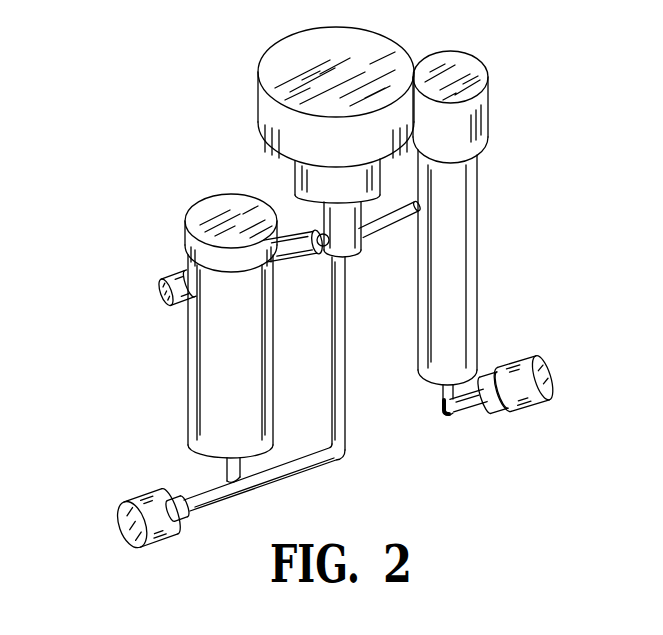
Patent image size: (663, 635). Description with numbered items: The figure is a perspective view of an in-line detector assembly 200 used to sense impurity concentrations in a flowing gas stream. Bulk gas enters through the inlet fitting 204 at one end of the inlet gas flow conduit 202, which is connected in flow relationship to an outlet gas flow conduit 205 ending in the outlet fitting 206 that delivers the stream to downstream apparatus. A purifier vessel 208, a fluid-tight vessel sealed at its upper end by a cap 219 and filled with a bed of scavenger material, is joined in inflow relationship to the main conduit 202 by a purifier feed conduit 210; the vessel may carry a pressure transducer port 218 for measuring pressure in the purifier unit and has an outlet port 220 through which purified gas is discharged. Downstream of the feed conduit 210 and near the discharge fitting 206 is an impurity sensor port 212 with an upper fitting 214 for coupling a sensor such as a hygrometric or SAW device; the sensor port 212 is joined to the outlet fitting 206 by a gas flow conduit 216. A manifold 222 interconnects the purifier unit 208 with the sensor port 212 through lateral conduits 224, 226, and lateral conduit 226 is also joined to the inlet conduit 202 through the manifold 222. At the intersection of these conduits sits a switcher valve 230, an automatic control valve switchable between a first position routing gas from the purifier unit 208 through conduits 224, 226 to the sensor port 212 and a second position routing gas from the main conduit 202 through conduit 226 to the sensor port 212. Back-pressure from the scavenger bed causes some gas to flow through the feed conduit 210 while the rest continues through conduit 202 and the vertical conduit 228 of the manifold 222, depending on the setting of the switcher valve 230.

The in-line detector assembly 200 is at (146, 128).
The inlet gas flow conduit 202 is at (295, 478).
The inlet fitting 204 is at (157, 545).
The outlet gas flow conduit 205 is at (470, 418).
The outlet fitting 206 is at (502, 408).
The purifier vessel 208 is at (188, 388).
The purifier feed conduit 210 is at (227, 468).
The impurity sensor port 212 is at (478, 294).
The upper fitting 214 is at (488, 103).
The gas flow conduit 216 is at (441, 393).
The pressure transducer port 218 is at (170, 267).
The cap 219 is at (200, 207).
The outlet port 220 is at (278, 266).
The manifold 222 is at (372, 291).
The lateral conduit 224 is at (318, 233).
The lateral conduit 226 is at (384, 218).
The vertical conduit 228 is at (330, 393).
The switcher valve 230 is at (258, 106).